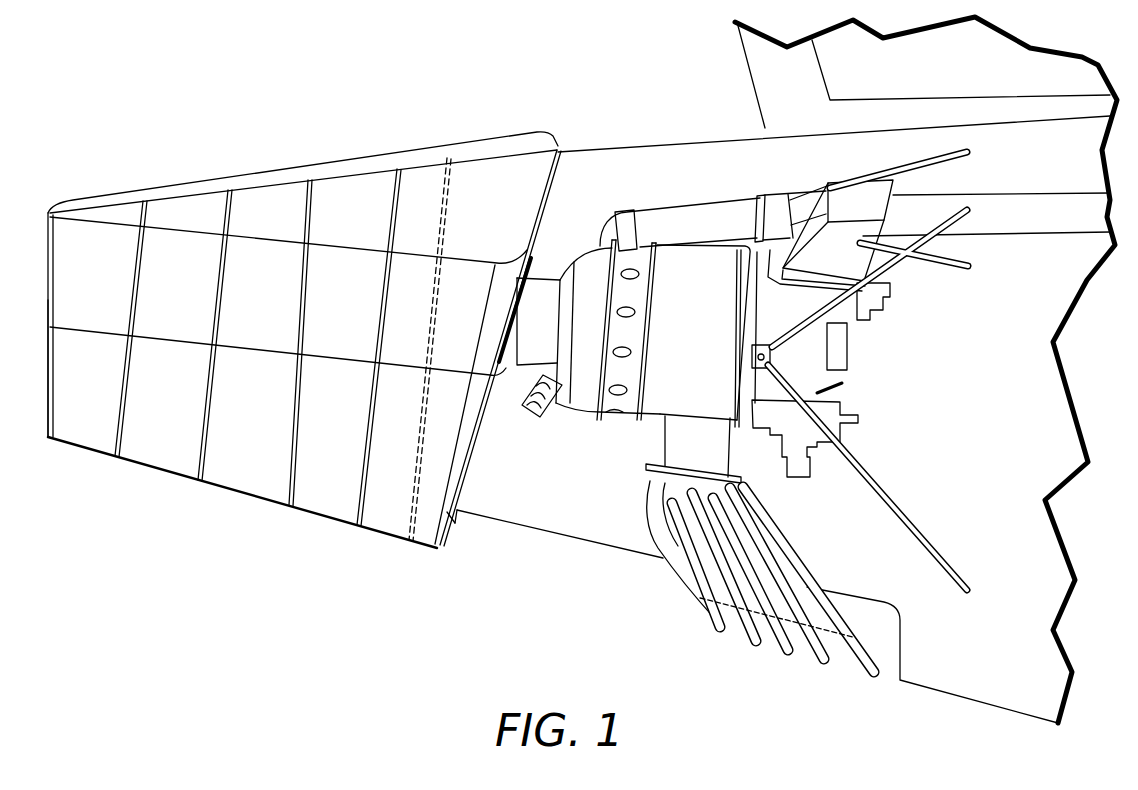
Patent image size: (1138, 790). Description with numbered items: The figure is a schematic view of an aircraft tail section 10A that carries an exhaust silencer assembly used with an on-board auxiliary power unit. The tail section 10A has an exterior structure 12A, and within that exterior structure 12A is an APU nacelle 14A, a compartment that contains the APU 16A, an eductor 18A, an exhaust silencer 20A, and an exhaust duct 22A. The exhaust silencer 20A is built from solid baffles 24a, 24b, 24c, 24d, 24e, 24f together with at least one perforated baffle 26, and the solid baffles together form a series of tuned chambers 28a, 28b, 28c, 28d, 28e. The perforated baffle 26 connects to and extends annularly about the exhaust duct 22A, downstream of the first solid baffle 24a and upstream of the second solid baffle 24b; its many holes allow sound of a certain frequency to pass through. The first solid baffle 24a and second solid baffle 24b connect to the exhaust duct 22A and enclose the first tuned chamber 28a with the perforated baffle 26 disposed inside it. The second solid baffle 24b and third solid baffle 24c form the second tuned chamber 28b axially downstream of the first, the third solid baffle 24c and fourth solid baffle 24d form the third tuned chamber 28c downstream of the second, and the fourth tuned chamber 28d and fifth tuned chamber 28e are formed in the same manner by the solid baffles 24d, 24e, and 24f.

The aircraft tail section 10A is at (728, 82).
The exterior structure 12A is at (738, 130).
The APU nacelle 14A is at (609, 505).
The APU 16A is at (558, 425).
The eductor 18A is at (517, 263).
The exhaust silencer 20A is at (300, 158).
The exhaust duct 22A is at (455, 283).
The first solid baffle 24a is at (448, 512).
The second solid baffle 24b is at (360, 495).
The third solid baffle 24c is at (289, 478).
The fourth solid baffle 24d is at (198, 457).
The fifth solid baffle 24e is at (122, 432).
The sixth solid baffle 24f is at (50, 422).
The perforated baffle 26 is at (438, 234).
The first tuned chamber 28a is at (398, 529).
The second tuned chamber 28b is at (322, 509).
The third tuned chamber 28c is at (238, 486).
The fourth tuned chamber 28d is at (158, 457).
The fifth tuned chamber 28e is at (86, 424).